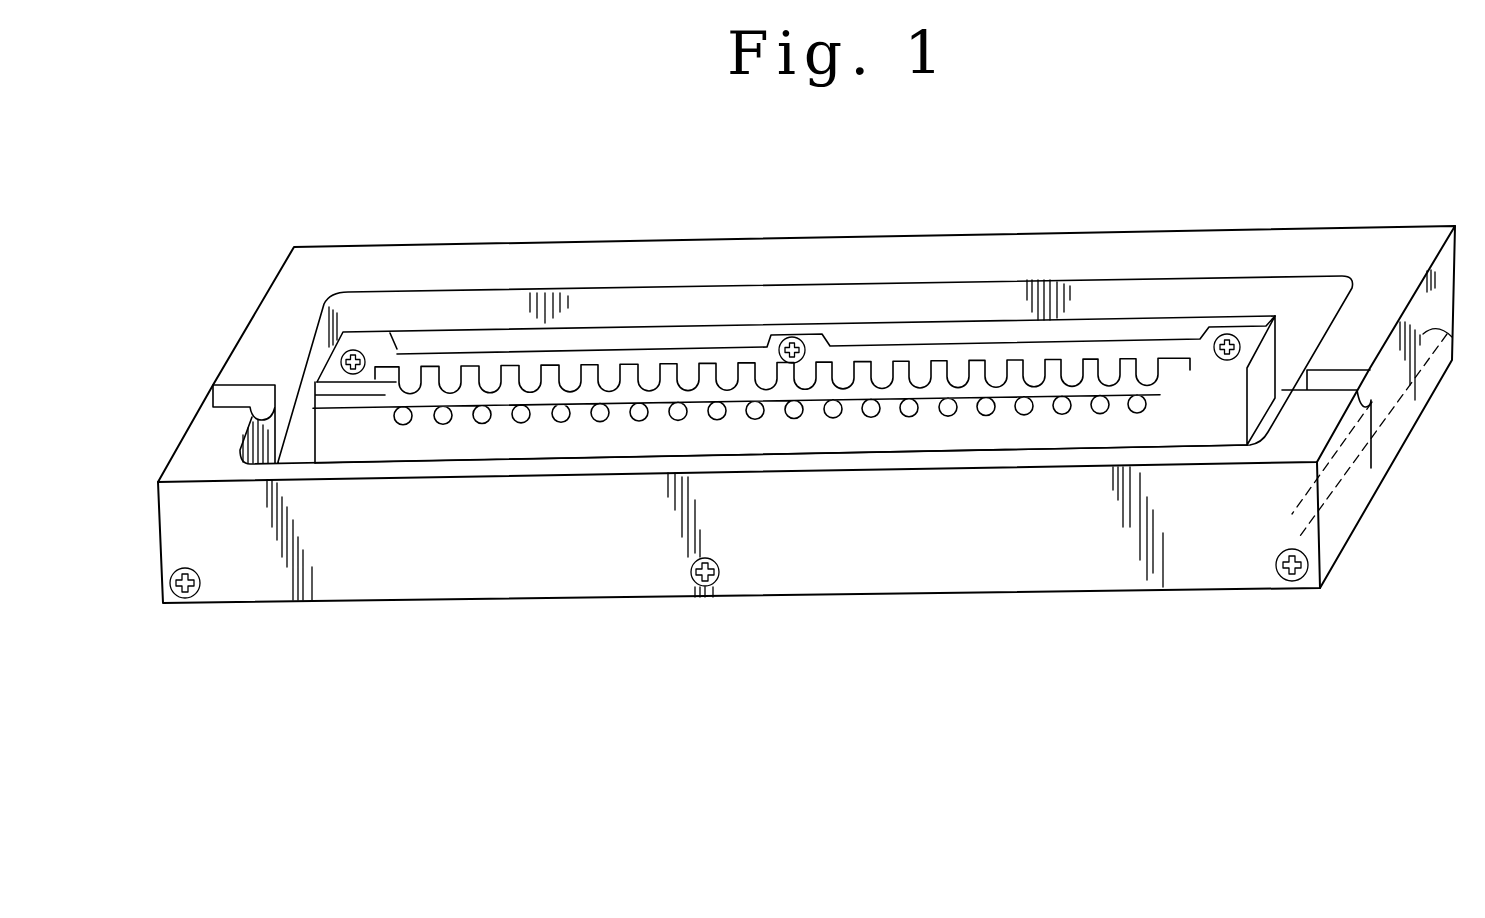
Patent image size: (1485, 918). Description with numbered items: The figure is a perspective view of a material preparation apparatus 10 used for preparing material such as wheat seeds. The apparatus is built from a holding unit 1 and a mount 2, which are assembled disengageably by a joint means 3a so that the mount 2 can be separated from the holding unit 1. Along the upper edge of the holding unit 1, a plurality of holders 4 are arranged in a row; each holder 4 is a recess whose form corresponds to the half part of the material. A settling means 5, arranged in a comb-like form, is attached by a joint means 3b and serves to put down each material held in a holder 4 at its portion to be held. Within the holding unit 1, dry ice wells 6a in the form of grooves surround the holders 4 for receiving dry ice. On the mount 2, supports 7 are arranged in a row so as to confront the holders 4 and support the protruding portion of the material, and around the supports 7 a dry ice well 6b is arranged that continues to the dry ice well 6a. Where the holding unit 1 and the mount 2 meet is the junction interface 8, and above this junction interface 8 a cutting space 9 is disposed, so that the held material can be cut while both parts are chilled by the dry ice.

The holding unit 1 is at (1274, 228).
The mount 2 is at (975, 572).
The joint means 3a is at (1292, 588).
The joint means 3b is at (357, 352).
The holder 4 is at (398, 396).
The settling means 5 is at (650, 362).
The dry ice well 6a is at (1097, 307).
The dry ice well 6b is at (647, 440).
The support 7 is at (486, 420).
The junction interface 8 is at (1373, 437).
The cutting space 9 is at (332, 396).
The material preparation apparatus 10 is at (934, 211).